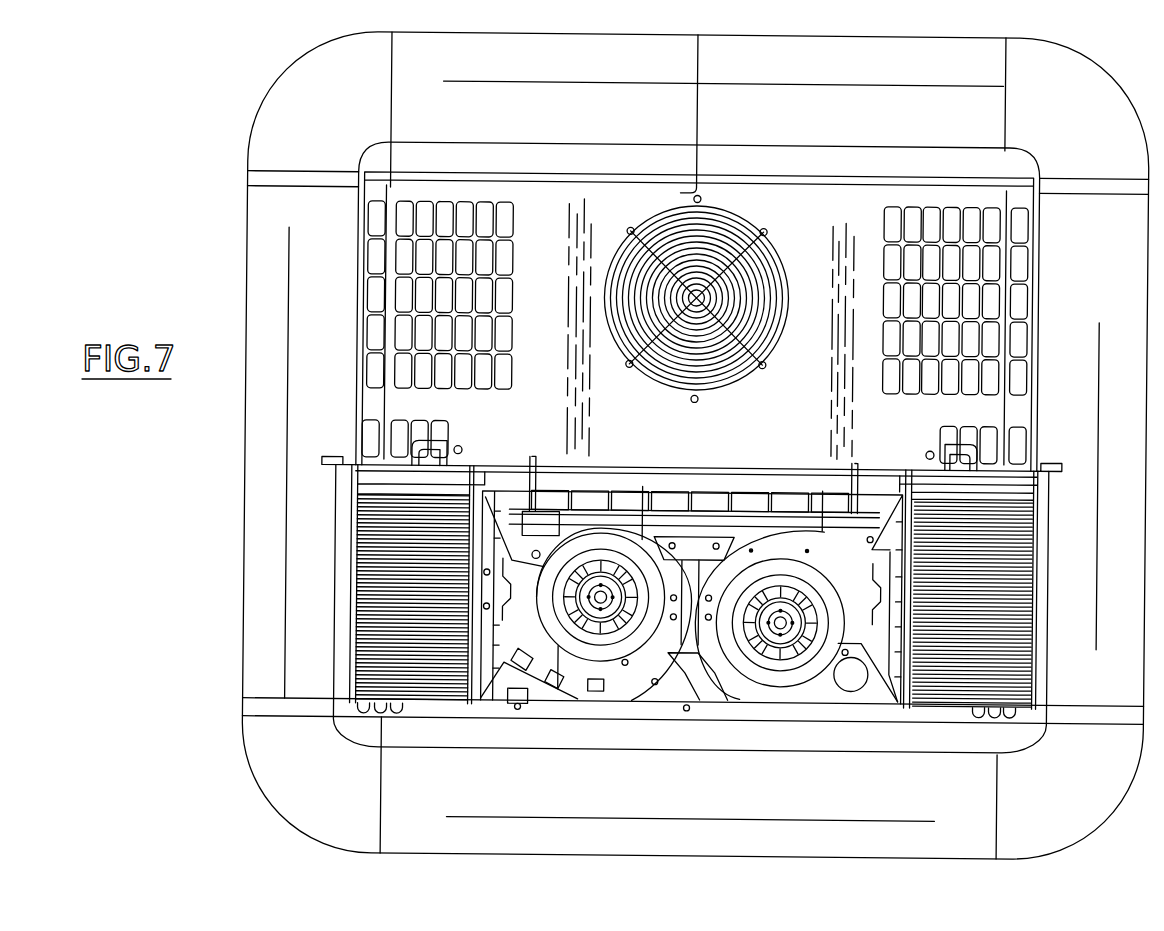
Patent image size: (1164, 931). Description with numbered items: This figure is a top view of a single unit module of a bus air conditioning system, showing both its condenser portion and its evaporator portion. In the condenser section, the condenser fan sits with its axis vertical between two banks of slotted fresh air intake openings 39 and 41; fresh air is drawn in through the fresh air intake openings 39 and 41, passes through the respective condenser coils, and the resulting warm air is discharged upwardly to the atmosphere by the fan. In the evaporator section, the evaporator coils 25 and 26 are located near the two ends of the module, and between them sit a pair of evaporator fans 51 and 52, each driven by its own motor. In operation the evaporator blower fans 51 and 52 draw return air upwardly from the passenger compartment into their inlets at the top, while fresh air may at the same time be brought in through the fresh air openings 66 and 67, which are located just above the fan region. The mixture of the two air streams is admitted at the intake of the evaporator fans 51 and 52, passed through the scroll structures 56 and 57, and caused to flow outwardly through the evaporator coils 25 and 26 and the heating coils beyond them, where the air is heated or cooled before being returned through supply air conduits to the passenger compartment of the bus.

The evaporator coil 25 is at (1000, 713).
The evaporator coil 26 is at (427, 680).
The fresh air intake opening 39 is at (450, 302).
The fresh air intake opening 41 is at (942, 302).
The evaporator fan 51 is at (593, 637).
The evaporator fan 52 is at (787, 657).
The scroll structure 56 is at (636, 688).
The scroll structure 57 is at (710, 575).
The fresh air opening 66 is at (949, 435).
The fresh air opening 67 is at (442, 438).